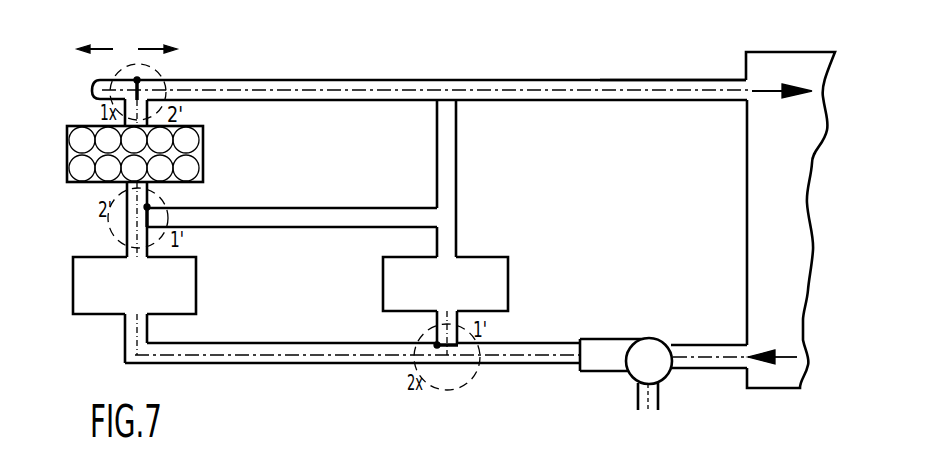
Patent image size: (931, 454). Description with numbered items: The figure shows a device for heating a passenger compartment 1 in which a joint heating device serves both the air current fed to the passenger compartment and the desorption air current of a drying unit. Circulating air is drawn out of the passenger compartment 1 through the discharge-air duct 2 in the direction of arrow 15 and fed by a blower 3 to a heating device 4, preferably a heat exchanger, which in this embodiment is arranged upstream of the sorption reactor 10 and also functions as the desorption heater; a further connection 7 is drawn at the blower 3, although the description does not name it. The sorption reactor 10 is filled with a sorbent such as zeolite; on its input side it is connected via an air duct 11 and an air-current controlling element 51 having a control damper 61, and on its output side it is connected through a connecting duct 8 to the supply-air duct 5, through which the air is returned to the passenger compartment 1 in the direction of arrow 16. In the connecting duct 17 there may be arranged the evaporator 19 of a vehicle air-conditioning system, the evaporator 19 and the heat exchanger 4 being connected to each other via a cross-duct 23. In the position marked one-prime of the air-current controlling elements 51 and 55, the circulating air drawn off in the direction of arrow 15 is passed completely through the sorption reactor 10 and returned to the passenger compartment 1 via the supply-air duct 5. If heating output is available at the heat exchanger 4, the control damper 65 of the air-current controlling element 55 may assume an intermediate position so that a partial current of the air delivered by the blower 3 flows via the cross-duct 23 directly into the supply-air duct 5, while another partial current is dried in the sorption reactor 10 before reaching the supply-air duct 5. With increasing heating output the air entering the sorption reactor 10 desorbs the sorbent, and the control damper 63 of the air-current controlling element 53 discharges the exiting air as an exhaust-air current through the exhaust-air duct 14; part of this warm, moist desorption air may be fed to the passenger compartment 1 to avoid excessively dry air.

The passenger compartment 1 is at (747, 186).
The discharge-air duct 2 is at (712, 345).
The blower 3 is at (648, 345).
The heating device 4 is at (190, 286).
The supply-air duct 5 is at (643, 80).
The drain connection 7 is at (660, 408).
The connecting duct 8 is at (306, 82).
The sorption reactor 10 is at (203, 152).
The air duct 11 is at (207, 365).
The exhaust-air duct 14 is at (92, 87).
The arrow 15 is at (795, 355).
The arrow 16 is at (771, 94).
The connecting duct 17 is at (457, 218).
The evaporator 19 is at (508, 287).
The cross-duct 23 is at (298, 208).
The air-current controlling element 51 is at (472, 368).
The air-current controlling element 53 is at (170, 57).
The air-current controlling element 55 is at (160, 192).
The control damper 61 is at (445, 348).
The control damper 63 is at (130, 92).
The control damper 65 is at (142, 217).